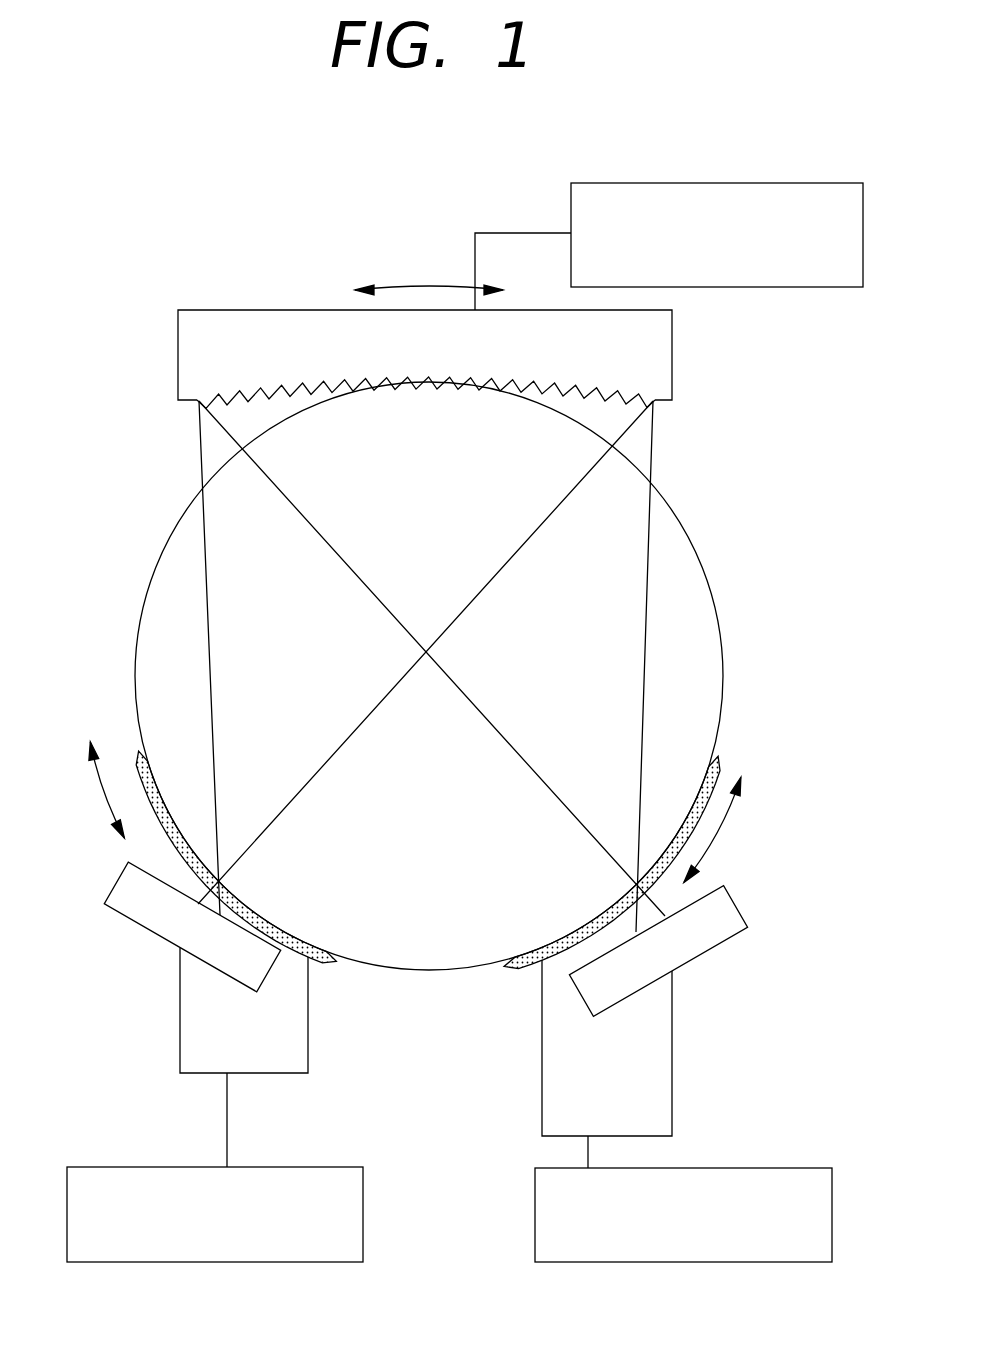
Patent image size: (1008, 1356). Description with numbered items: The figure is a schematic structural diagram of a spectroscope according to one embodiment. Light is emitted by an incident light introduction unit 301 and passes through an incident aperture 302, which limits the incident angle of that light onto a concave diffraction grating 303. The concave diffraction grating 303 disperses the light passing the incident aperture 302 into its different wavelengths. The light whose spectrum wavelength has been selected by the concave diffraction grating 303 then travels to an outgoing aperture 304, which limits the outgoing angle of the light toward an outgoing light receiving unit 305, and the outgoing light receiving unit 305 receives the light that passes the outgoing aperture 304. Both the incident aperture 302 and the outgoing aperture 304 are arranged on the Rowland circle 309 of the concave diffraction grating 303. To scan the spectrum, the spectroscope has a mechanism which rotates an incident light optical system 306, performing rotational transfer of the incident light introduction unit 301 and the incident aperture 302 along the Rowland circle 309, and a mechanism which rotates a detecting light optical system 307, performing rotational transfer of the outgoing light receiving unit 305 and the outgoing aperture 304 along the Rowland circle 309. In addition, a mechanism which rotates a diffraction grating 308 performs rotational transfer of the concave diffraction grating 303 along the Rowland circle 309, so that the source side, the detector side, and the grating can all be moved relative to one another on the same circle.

The incident light introduction unit 301 is at (206, 1014).
The incident aperture 302 is at (218, 880).
The concave diffraction grating 303 is at (672, 340).
The outgoing aperture 304 is at (638, 885).
The outgoing light receiving unit 305 is at (645, 1027).
The mechanism which rotates an incident light optical system 306 is at (243, 1234).
The mechanism which rotates a detecting light optical system 307 is at (713, 1234).
The mechanism which rotates a diffraction grating 308 is at (746, 252).
The Rowland circle 309 is at (727, 702).